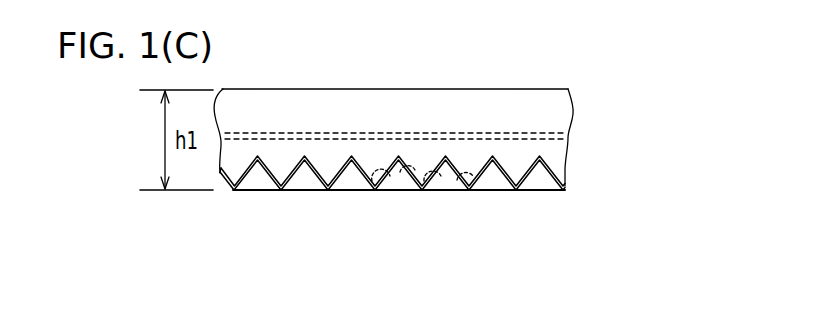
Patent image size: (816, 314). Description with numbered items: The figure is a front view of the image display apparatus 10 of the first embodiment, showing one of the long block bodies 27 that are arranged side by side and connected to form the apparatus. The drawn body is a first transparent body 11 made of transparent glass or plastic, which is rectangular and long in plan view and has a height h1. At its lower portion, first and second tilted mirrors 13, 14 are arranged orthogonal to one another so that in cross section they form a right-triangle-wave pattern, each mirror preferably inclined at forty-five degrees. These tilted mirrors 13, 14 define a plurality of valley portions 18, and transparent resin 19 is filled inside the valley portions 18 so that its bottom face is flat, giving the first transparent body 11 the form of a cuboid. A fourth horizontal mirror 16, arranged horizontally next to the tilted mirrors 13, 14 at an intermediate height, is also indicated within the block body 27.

The image display apparatus 10 is at (507, 80).
The first transparent body 11 is at (578, 95).
The block body 27 is at (572, 138).
The first tilted mirror 13 is at (375, 190).
The second tilted mirror 14 is at (413, 191).
The fourth horizontal mirror 16 is at (278, 137).
The valley portion 18 is at (493, 183).
The transparent resin 19 is at (538, 182).